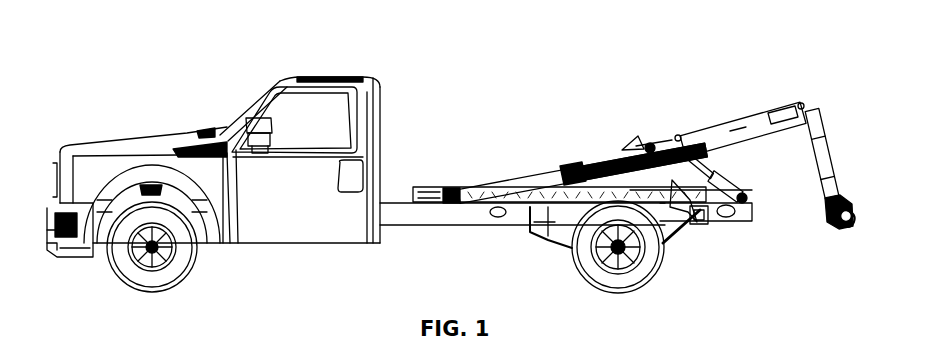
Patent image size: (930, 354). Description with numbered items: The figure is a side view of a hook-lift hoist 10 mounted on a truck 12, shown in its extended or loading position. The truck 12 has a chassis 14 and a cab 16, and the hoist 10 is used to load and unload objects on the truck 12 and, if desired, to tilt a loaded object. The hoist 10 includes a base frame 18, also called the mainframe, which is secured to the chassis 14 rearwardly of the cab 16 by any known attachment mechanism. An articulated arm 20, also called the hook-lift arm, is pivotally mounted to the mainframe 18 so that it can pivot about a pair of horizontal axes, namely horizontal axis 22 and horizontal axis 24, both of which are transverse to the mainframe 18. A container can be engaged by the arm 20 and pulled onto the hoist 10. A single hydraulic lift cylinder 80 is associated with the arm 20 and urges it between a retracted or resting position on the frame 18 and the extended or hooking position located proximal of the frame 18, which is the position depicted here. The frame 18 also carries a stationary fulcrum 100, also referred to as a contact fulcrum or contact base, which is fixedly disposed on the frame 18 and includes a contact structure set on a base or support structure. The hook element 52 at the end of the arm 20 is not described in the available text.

The hook-lift hoist 10 is at (476, 50).
The truck 12 is at (73, 283).
The chassis 14 is at (417, 218).
The cab 16 is at (160, 110).
The base frame 18 is at (523, 195).
The articulated arm 20 is at (695, 118).
The horizontal axis 22 is at (746, 201).
The horizontal axis 24 is at (650, 146).
The hook 52 is at (850, 228).
The hydraulic lift cylinder 80 is at (540, 163).
The stationary fulcrum 100 is at (677, 190).